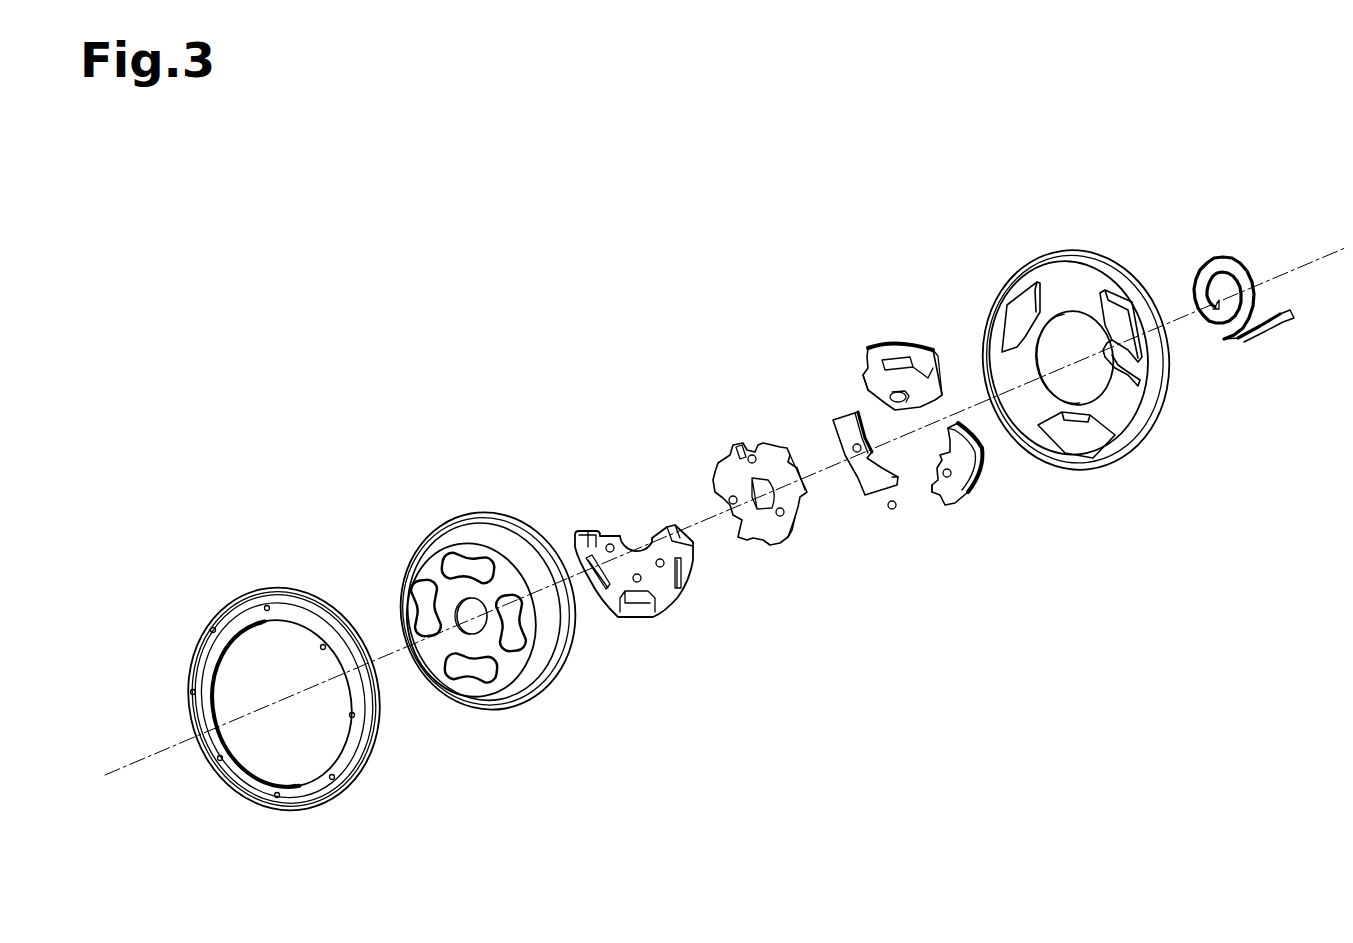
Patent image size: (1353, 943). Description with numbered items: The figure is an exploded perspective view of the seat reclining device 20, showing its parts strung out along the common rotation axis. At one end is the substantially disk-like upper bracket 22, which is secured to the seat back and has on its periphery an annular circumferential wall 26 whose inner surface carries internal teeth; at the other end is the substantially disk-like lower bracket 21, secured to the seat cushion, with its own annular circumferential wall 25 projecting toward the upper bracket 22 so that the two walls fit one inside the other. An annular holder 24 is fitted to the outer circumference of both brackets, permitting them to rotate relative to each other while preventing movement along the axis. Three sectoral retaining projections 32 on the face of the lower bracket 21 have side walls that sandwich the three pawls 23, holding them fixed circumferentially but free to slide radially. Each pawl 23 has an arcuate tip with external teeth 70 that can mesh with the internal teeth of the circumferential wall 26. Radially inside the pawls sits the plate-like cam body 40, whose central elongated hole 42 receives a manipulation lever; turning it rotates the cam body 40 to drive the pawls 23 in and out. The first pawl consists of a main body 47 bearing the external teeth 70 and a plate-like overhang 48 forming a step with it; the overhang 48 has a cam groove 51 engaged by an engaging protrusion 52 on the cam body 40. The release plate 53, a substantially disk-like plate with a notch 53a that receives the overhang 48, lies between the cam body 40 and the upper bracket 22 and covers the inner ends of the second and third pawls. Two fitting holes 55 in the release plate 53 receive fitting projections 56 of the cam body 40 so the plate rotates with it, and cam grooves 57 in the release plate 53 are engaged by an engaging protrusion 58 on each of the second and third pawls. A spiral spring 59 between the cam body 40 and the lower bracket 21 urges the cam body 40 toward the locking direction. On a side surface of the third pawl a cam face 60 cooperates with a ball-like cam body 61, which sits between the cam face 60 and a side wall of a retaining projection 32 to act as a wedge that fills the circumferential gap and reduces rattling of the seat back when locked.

The seat reclining device 20 is at (198, 216).
The lower bracket 21 is at (1018, 212).
The upper bracket 22 is at (400, 498).
The pawls 23 is at (857, 348).
The holder 24 is at (290, 592).
The circumferential wall 25 is at (1068, 260).
The circumferential wall 26 is at (512, 526).
The retaining projections 32 is at (1008, 316).
The cam body 40 is at (708, 410).
The elongated hole 42 is at (748, 528).
The main body 47 is at (932, 370).
The overhang 48 is at (868, 382).
The cam groove 51 is at (907, 405).
The engaging protrusion 52 is at (732, 454).
The release plate 53 is at (562, 463).
The notch 53a is at (598, 531).
The fitting holes 55 is at (598, 540).
The fitting projections 56 is at (722, 496).
The cam grooves 57 is at (610, 590).
The engaging protrusion 58 is at (852, 447).
The spiral spring 59 is at (1228, 252).
The cam face 60 is at (934, 498).
The cam body 61 is at (893, 511).
The external teeth 70 is at (915, 342).